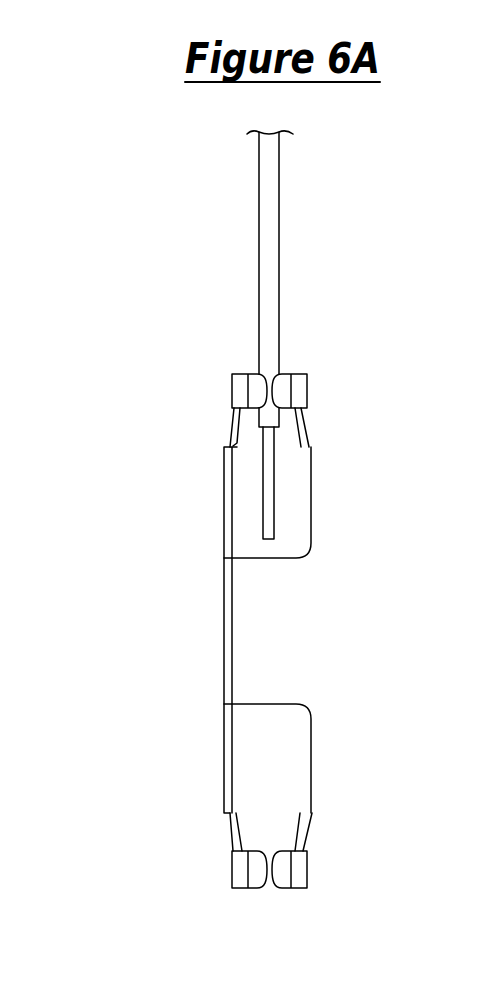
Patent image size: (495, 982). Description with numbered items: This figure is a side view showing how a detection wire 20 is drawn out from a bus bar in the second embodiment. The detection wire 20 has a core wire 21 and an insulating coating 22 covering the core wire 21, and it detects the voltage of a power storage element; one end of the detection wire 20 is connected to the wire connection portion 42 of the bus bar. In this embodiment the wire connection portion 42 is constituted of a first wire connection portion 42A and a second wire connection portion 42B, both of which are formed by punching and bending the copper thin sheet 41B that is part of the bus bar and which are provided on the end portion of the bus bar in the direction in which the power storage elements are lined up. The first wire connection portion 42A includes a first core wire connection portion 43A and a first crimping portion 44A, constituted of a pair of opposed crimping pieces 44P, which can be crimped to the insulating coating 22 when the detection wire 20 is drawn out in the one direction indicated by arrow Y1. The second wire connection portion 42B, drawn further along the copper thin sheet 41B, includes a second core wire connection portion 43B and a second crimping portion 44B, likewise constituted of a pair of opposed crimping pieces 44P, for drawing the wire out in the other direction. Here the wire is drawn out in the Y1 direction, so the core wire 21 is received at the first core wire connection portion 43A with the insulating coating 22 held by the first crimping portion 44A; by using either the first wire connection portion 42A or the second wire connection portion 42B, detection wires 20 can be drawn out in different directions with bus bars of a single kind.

The detection wire 20 is at (298, 204).
The core wire 21 is at (268, 508).
The insulating coating 22 is at (267, 419).
The copper thin sheet 41B is at (228, 622).
The wire connection portion 42 is at (302, 917).
The first wire connection portion 42A is at (338, 472).
The second wire connection portion 42B is at (338, 811).
The first core wire connection portion 43A is at (304, 502).
The second core wire connection portion 43B is at (304, 758).
The crimping pieces 44P is at (234, 381).
The first crimping portion 44A is at (263, 413).
The second crimping portion 44B is at (261, 882).